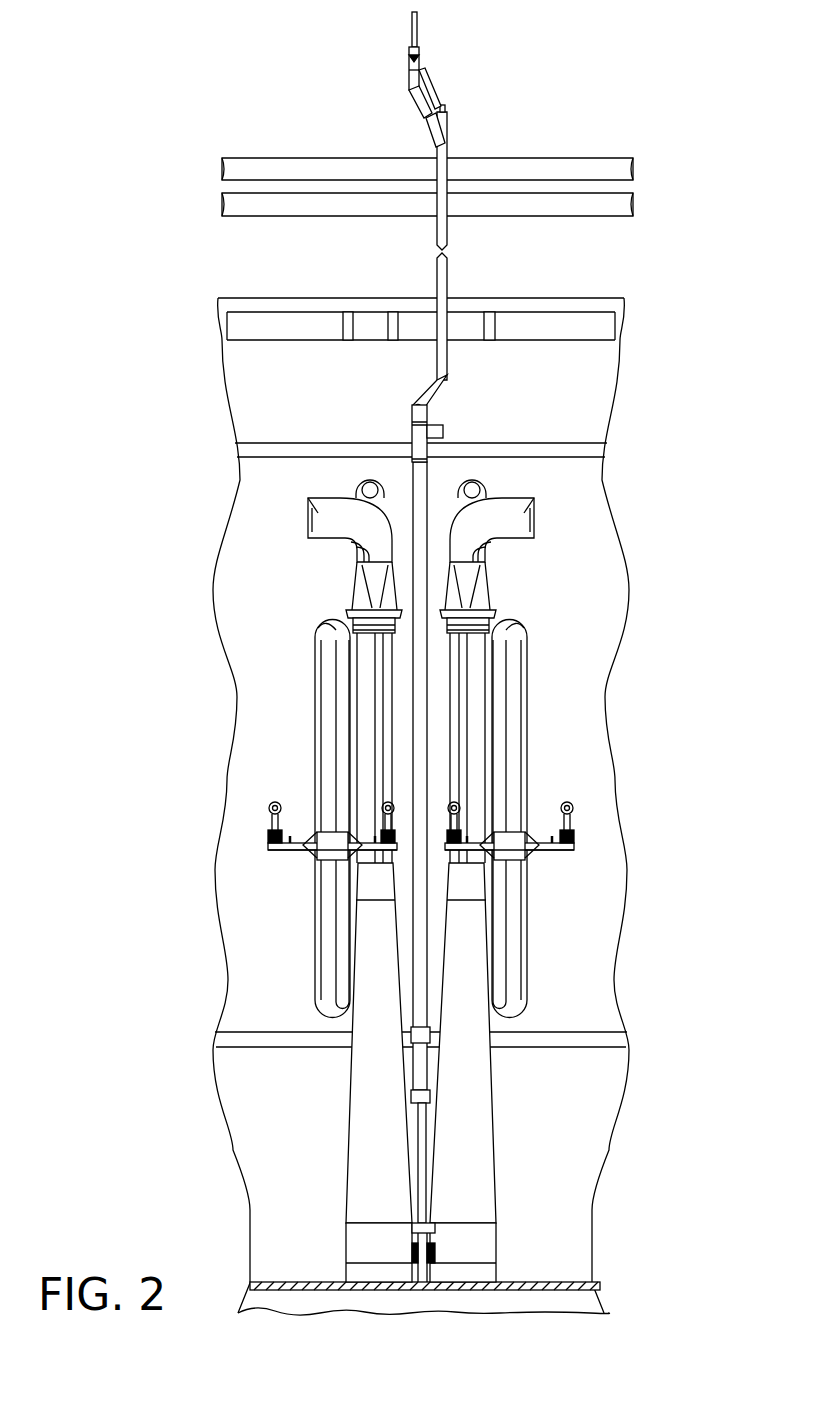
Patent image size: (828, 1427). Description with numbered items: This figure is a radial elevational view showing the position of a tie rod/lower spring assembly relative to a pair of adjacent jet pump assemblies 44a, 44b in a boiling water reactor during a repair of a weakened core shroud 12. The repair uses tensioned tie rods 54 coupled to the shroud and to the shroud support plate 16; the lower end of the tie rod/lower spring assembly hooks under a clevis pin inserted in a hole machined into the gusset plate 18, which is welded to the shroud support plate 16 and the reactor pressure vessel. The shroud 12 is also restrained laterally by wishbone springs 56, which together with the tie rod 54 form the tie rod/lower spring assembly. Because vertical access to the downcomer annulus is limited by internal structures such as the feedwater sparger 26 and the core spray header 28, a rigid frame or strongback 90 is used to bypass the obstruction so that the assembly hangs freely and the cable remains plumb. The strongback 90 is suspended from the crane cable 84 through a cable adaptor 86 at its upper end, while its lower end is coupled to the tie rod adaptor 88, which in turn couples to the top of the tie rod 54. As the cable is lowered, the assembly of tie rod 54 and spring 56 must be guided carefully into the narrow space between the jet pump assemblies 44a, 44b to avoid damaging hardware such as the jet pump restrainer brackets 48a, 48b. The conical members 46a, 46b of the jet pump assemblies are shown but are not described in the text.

The shroud 12 is at (592, 613).
The shroud support plate 16 is at (560, 1283).
The gusset plate 18 is at (432, 1252).
The feedwater sparger 26 is at (333, 165).
The core spray header 28 is at (300, 205).
The jet pump assembly 44a is at (316, 747).
The jet pump assembly 44b is at (526, 747).
The first conical member 46a is at (363, 1103).
The second conical member 46b is at (480, 1097).
The jet pump restrainer bracket 48a is at (312, 852).
The jet pump restrainer bracket 48b is at (530, 850).
The tie rod 54 is at (420, 660).
The wishbone spring 56 is at (418, 1167).
The cable 84 is at (417, 22).
The cable adaptor 86 is at (420, 50).
The tie rod adaptor 88 is at (412, 432).
The strongback 90 is at (447, 265).